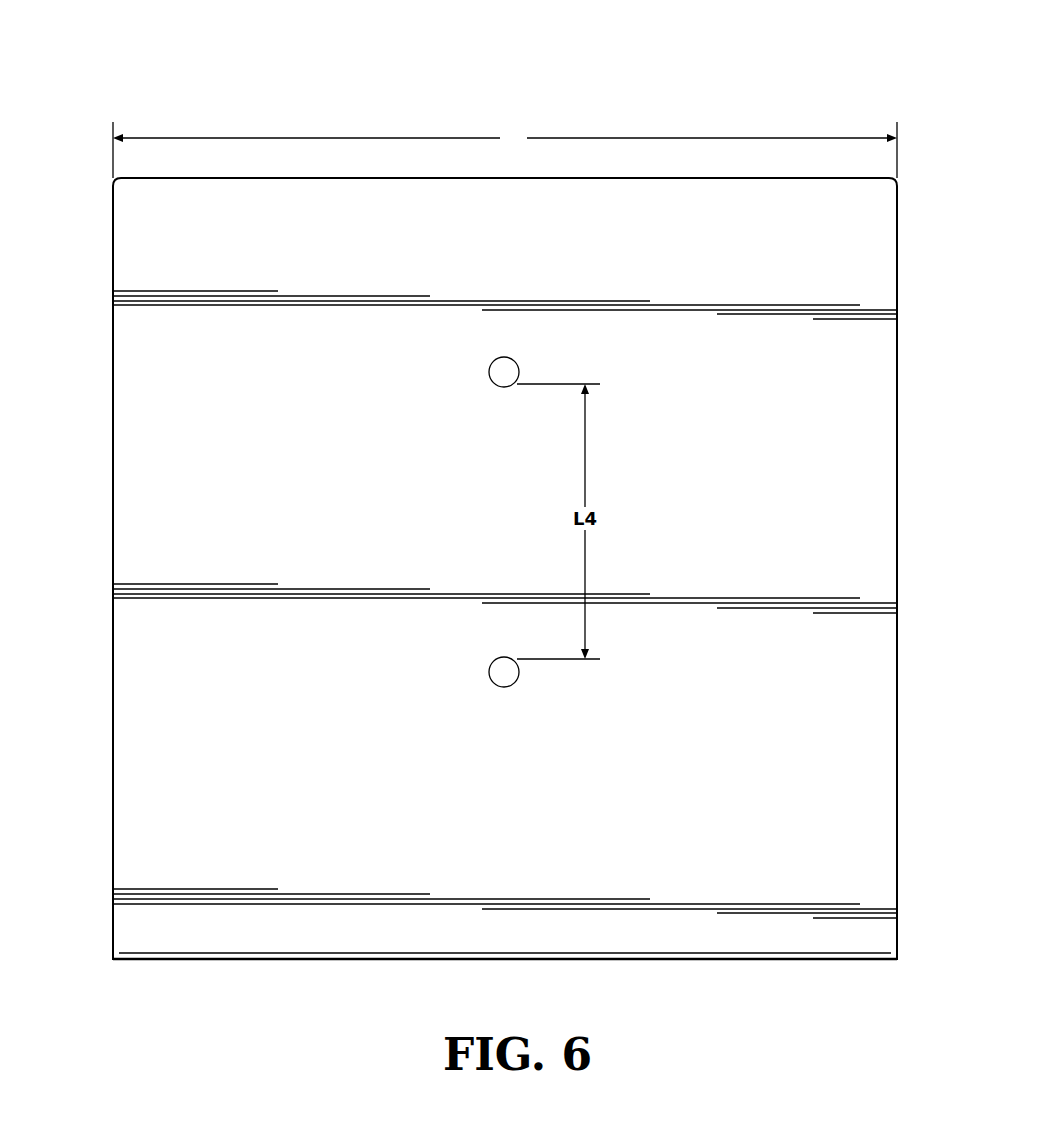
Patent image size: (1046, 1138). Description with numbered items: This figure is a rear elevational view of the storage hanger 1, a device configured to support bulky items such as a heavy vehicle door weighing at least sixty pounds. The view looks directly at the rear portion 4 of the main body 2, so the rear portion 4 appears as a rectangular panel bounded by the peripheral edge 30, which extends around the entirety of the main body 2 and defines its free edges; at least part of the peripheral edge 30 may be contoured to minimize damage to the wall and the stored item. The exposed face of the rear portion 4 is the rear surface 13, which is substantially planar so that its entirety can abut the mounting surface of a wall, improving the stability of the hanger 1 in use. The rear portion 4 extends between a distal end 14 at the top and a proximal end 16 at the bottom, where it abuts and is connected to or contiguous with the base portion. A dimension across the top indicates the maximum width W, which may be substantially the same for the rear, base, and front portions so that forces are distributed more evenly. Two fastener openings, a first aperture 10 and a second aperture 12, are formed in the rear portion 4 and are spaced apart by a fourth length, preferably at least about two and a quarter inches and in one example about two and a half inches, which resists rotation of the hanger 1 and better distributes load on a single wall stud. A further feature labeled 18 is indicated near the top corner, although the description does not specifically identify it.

The storage hanger 1 is at (278, 86).
The top edge 18 is at (112, 177).
The distal end 14 is at (716, 130).
The main body 2 is at (112, 270).
The rear surface 13 is at (165, 432).
The peripheral edge 30 is at (898, 523).
The rear portion 4 is at (148, 648).
The proximal end 16 is at (768, 962).
The first aperture 10 is at (489, 372).
The second aperture 12 is at (489, 673).